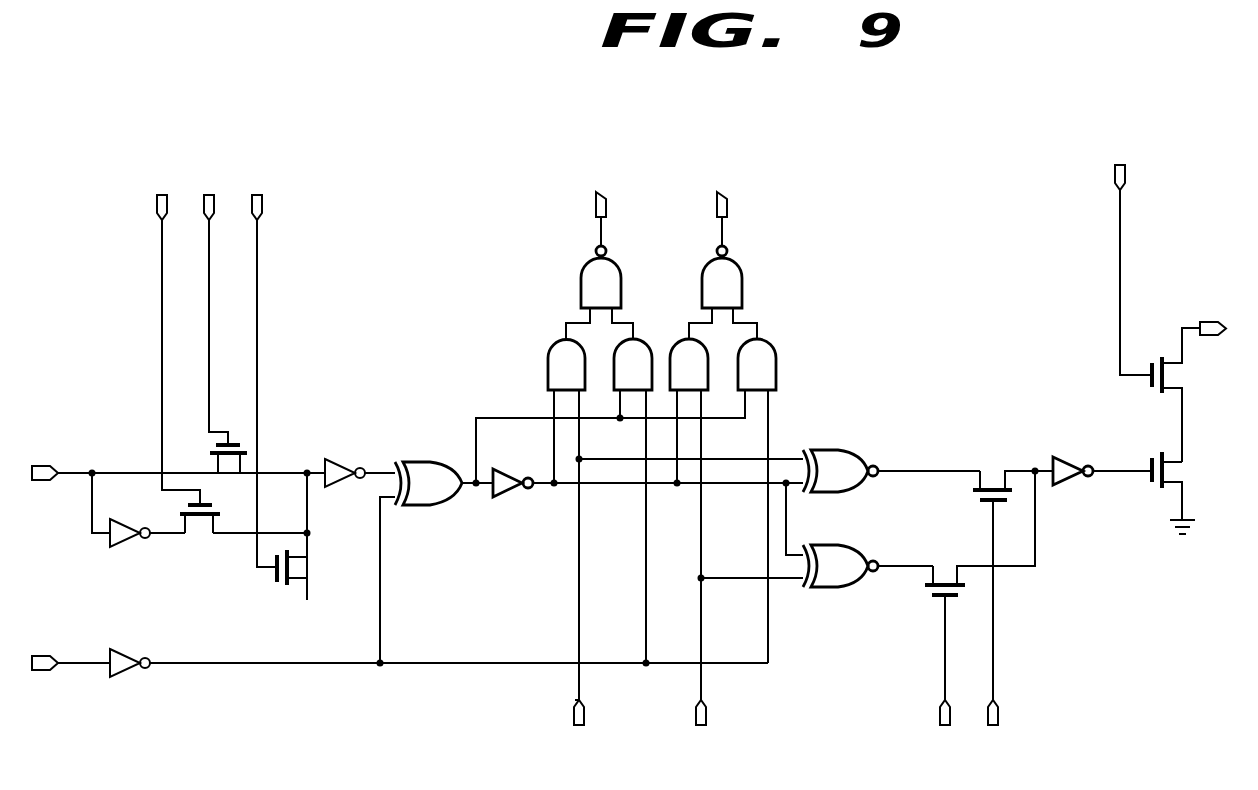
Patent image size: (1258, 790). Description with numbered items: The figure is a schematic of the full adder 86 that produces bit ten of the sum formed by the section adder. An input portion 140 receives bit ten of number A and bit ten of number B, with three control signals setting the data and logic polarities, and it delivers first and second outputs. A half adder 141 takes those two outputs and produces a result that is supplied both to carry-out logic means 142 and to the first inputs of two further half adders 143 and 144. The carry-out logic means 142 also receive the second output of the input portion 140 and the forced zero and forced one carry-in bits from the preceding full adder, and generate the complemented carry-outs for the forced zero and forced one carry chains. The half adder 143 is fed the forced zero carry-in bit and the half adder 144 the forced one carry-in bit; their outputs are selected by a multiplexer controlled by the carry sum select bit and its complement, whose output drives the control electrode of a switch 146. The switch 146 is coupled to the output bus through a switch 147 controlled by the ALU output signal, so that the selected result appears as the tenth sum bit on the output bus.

The full adder 86 is at (172, 46).
The input portion 140 is at (117, 380).
The half adder 141 is at (422, 418).
The carry-out logic means 142 is at (540, 253).
The half adder 143 is at (840, 412).
The half adder 144 is at (853, 613).
The switch 146 is at (1157, 497).
The switch 147 is at (1150, 395).